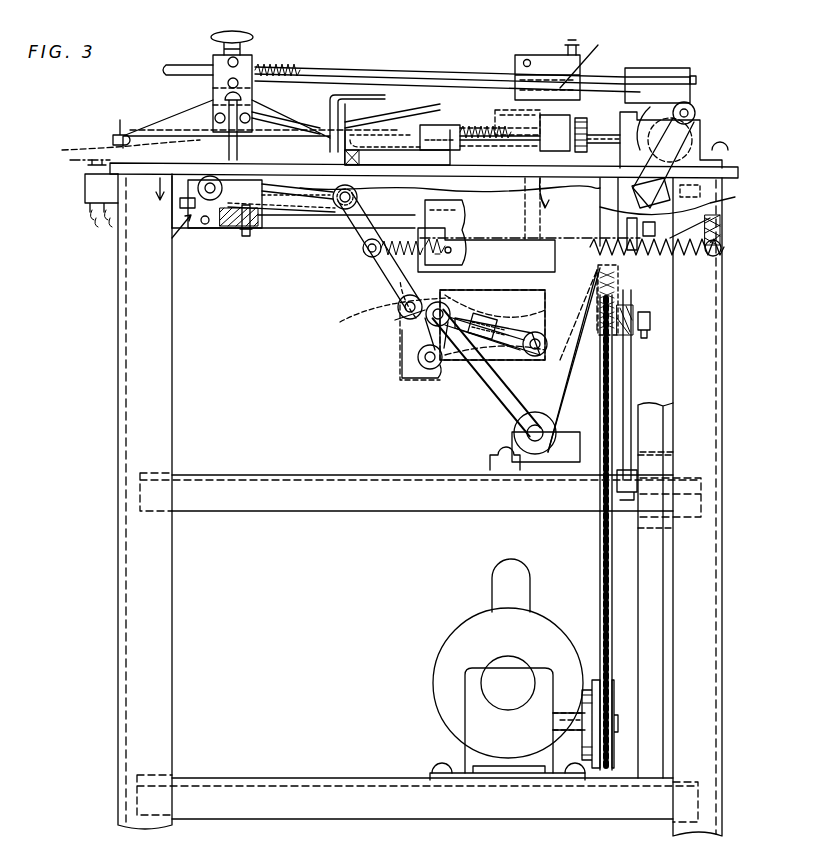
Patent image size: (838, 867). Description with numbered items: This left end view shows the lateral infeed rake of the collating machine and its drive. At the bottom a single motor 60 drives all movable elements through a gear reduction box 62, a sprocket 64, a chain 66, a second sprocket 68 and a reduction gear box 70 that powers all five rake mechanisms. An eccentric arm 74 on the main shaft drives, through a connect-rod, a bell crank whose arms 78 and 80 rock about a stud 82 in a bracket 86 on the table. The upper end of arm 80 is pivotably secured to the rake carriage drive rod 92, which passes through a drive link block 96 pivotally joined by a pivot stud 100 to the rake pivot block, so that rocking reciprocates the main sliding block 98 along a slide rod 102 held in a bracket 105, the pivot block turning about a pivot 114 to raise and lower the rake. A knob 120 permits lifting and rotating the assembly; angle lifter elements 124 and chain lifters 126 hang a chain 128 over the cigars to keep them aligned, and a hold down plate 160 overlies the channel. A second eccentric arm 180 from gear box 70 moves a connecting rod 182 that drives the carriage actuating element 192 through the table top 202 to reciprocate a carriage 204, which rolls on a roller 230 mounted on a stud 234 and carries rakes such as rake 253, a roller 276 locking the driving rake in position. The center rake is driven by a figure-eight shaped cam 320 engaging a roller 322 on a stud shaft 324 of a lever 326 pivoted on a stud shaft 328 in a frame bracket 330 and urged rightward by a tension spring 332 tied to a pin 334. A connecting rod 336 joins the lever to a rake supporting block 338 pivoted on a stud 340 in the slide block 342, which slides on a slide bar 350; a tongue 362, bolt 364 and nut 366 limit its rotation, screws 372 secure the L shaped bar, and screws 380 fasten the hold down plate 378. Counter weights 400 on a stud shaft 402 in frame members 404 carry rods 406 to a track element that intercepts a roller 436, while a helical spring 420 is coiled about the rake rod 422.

The motor 60 is at (456, 635).
The gear reduction box 62 is at (472, 705).
The sprocket 64 is at (614, 755).
The chain 66 is at (598, 545).
The sprocket 68 is at (616, 380).
The reduction gear box 70 is at (555, 288).
The eccentric arm 74 is at (525, 325).
The bell crank arm 78 is at (488, 400).
The bell crank arm 80 is at (578, 418).
The stud 82 is at (532, 442).
The bracket 86 is at (490, 462).
The rake carriage drive rod 92 is at (630, 96).
The drive link block 96 is at (585, 56).
The main sliding block 98 is at (562, 39).
The pivot stud 100 is at (547, 77).
The slide rod 102 is at (400, 50).
The bracket 105 is at (675, 68).
The pivot 114 is at (526, 58).
The knob 120 is at (253, 37).
The angle lifter elements 124 is at (212, 80).
The chain lifter 126 is at (178, 118).
The chain 128 is at (114, 120).
The hold down plate 160 is at (385, 138).
The eccentric arm 180 is at (628, 308).
The connecting rod 182 is at (644, 336).
The rake carriage actuating element 192 is at (680, 218).
The table top 202 is at (737, 172).
The carriage 204 is at (505, 110).
The roller 230 is at (530, 209).
The stud 234 is at (552, 150).
The rake 253 is at (378, 196).
The roller 276 is at (494, 322).
The cam 320 is at (430, 330).
The roller 322 is at (377, 314).
The stud shaft 324 is at (400, 312).
The lever 326 is at (395, 330).
The stud shaft 328 is at (424, 368).
The frame bracket 330 is at (404, 372).
The tension spring 332 is at (700, 255).
The pin 334 is at (370, 255).
The connecting rod 336 is at (290, 214).
The rake supporting block 338 is at (126, 137).
The stud 340 is at (190, 232).
The center rake slide block 342 is at (162, 218).
The slide bar 350 is at (276, 214).
The tongue 362 is at (203, 226).
The bolt 364 is at (246, 236).
The nut 366 is at (240, 226).
The screw 372 is at (310, 124).
The hold down plate 378 is at (392, 113).
The screw 380 is at (355, 100).
The counter weight 400 is at (364, 252).
The stud shaft 402 is at (450, 255).
The frame member 404 is at (398, 292).
The rod 406 is at (464, 222).
The helical spring 420 is at (470, 115).
The rake rod 422 is at (598, 144).
The roller 436 is at (435, 122).